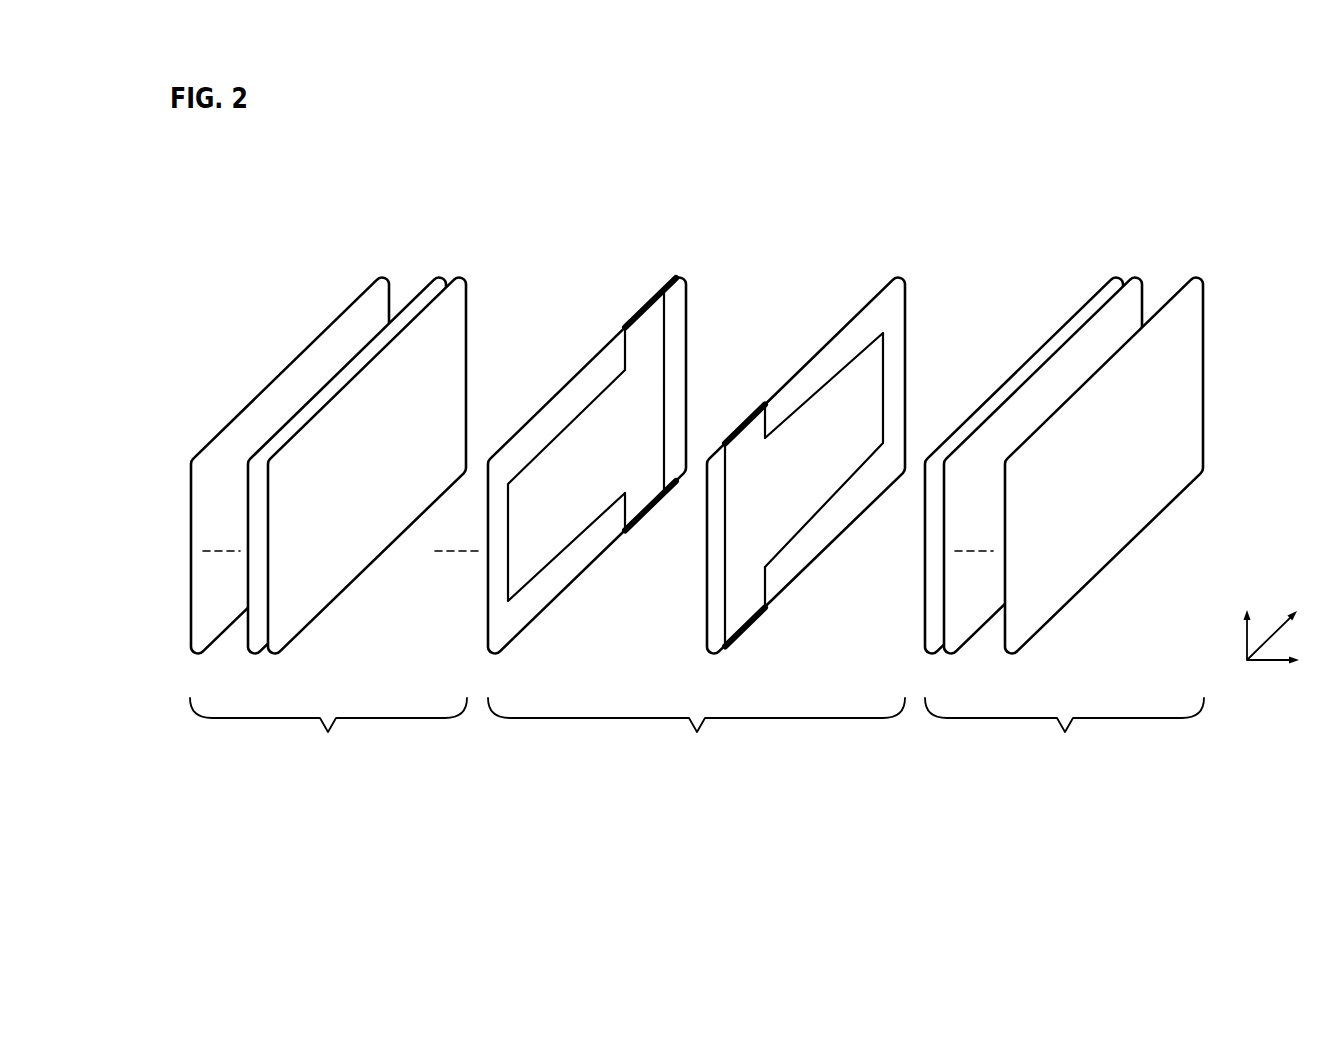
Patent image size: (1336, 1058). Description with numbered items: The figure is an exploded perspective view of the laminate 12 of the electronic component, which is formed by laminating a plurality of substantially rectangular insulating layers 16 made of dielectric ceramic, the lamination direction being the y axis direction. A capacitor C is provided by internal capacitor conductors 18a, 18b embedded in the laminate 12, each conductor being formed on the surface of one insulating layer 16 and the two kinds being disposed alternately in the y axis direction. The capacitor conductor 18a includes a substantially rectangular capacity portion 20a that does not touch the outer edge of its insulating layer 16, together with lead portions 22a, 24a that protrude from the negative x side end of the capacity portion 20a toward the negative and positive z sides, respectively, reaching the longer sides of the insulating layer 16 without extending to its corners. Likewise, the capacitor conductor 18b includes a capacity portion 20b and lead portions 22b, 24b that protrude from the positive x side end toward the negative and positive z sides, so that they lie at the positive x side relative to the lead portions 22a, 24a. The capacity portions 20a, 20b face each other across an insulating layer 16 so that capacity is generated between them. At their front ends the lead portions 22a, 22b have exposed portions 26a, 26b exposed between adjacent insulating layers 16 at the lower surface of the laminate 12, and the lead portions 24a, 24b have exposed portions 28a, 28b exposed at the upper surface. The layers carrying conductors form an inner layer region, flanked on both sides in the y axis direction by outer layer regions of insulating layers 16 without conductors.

The laminate 12 is at (229, 175).
The insulating layer 16 is at (383, 277).
The capacitor conductor 18a is at (839, 483).
The capacitor conductor 18b is at (605, 420).
The capacity portion 20a is at (868, 378).
The capacity portion 20b is at (541, 483).
The lead portion 22a is at (742, 604).
The lead portion 22b is at (638, 500).
The lead portion 24a is at (742, 431).
The lead portion 24b is at (644, 312).
The exposed portion 26a is at (758, 610).
The exposed portion 26b is at (655, 499).
The exposed portion 28a is at (763, 405).
The exposed portion 28b is at (641, 333).
The capacitor C is at (741, 280).